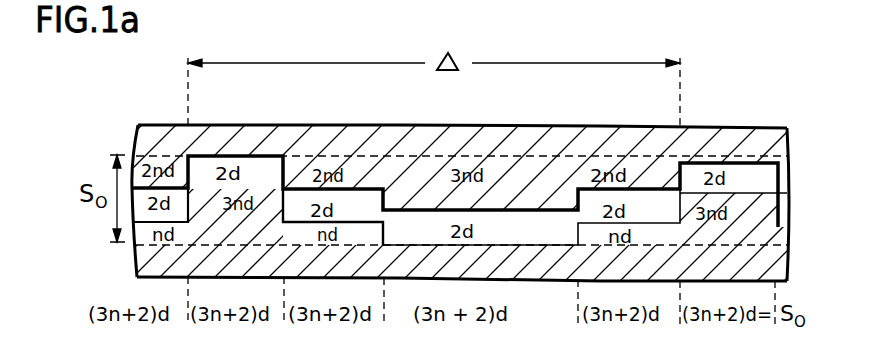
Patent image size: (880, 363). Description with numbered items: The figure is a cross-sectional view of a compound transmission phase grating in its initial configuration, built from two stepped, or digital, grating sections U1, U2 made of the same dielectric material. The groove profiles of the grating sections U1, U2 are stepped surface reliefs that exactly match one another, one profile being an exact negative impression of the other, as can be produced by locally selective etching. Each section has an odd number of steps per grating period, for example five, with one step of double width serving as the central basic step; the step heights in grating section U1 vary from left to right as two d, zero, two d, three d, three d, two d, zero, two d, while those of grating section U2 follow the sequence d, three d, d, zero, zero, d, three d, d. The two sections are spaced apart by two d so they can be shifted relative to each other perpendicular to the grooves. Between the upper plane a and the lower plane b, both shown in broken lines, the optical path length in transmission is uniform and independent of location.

The plane a is at (510, 157).
The plane b is at (246, 245).
The grating section U1 is at (462, 142).
The grating section U2 is at (462, 269).